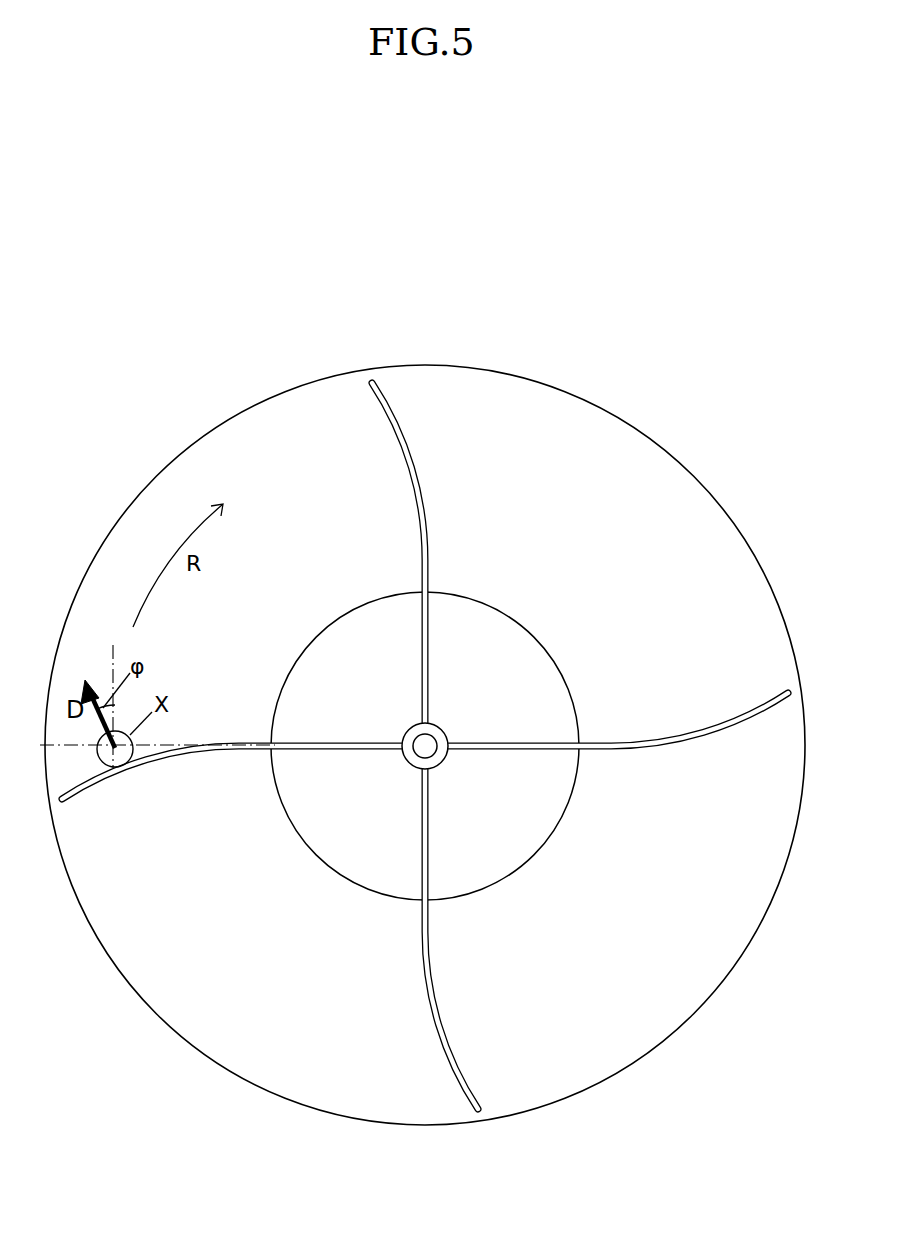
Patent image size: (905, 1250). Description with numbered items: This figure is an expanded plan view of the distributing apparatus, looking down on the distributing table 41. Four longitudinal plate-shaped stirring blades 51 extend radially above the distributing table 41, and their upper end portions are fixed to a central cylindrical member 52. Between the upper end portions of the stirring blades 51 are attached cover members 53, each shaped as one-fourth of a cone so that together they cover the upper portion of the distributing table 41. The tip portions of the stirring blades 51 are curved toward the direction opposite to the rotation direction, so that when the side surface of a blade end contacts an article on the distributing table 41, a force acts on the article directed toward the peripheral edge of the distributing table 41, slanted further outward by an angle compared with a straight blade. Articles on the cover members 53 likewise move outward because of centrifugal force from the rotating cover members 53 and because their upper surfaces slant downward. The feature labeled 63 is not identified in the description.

The distributing table 41 is at (613, 419).
The stirring blade 51 is at (413, 463).
The cylindrical member 52 is at (443, 765).
The cover member 53 is at (342, 617).
The shaft hole 63 is at (437, 735).